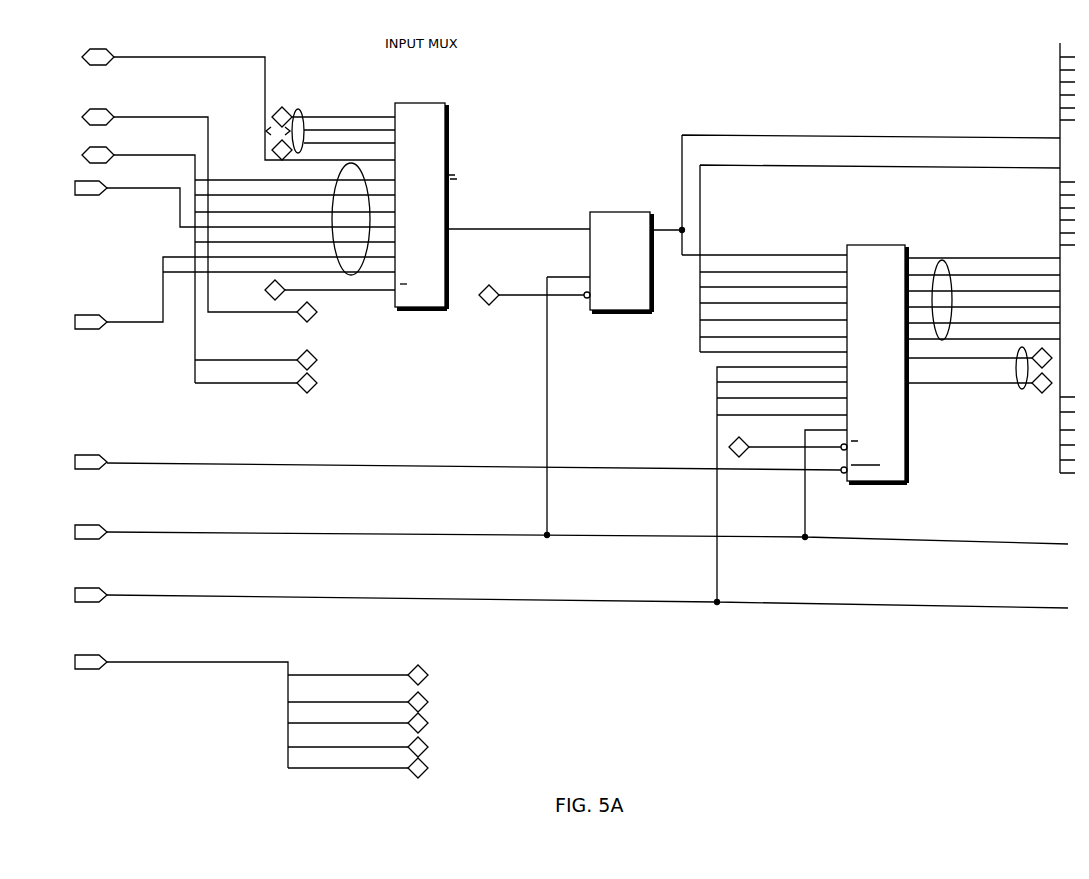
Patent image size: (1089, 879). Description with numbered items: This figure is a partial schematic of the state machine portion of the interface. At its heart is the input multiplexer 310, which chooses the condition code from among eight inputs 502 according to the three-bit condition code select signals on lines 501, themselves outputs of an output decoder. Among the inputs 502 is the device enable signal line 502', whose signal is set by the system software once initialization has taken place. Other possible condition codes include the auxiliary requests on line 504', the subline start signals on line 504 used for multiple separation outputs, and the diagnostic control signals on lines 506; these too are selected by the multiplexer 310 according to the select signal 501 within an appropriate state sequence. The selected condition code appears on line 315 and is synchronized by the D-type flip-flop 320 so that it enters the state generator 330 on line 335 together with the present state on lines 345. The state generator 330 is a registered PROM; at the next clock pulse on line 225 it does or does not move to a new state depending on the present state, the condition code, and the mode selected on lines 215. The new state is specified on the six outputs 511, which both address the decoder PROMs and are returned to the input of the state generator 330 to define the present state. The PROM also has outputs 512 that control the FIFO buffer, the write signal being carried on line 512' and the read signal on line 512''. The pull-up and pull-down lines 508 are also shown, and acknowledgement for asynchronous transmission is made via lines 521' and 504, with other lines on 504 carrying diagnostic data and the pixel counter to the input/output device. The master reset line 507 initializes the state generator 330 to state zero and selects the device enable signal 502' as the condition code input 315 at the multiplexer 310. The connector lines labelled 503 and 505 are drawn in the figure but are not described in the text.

The DEV_CS input connector 503 is at (238, 89).
The subline start signal line 504 is at (199, 201).
The auxiliary request line 504' is at (295, 163).
The MASK_HNDSHK input connector 505 is at (136, 252).
The diagnostic control signal lines 506 is at (235, 299).
The master reset line 507 is at (461, 447).
The pull-up and pull-down lines 508 is at (251, 474).
The condition code select signal lines 501 is at (303, 104).
The multiplexer inputs 502 is at (330, 219).
The device enable signal line 502' is at (397, 114).
The input multiplexer 310 is at (427, 298).
The condition code signal line 315 is at (517, 218).
The D-type flip-flop 320 is at (571, 375).
The state generator 330 is at (881, 256).
The synchronized condition code line 335 is at (851, 195).
The present state lines 345 is at (871, 247).
The state outputs 511 is at (945, 258).
The FIFO control outputs 512 is at (1020, 378).
The FIFO write signal line 512' is at (969, 380).
The FIFO read signal line 512'' is at (969, 404).
The acknowledgement line 521' is at (256, 354).
The clock line 225 is at (571, 480).
The mode select lines 215 is at (571, 480).